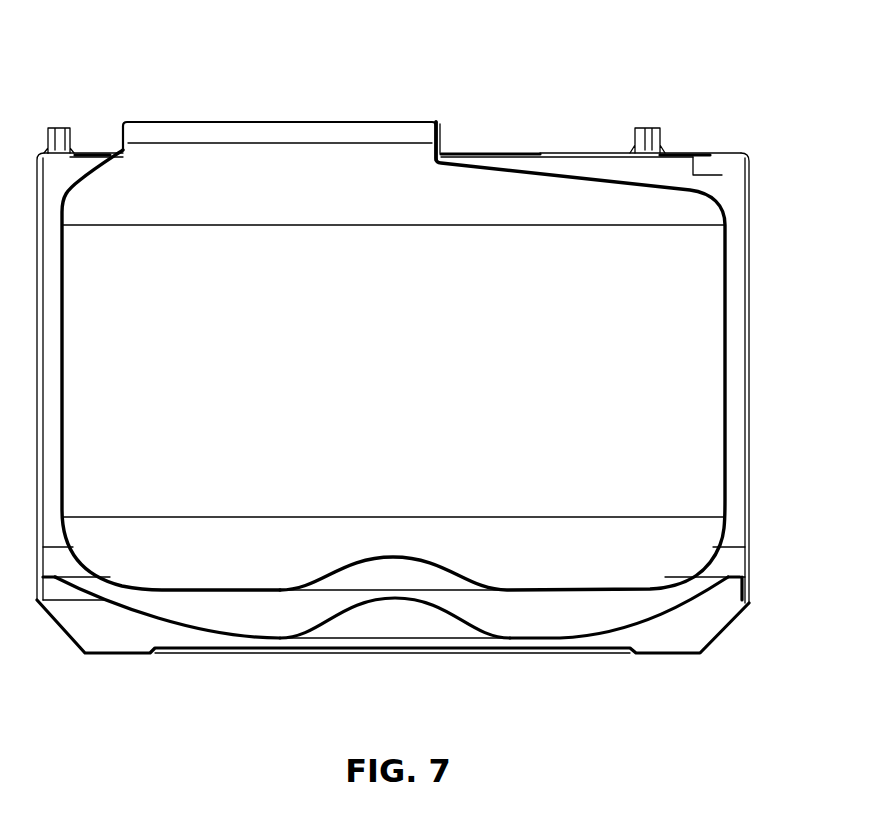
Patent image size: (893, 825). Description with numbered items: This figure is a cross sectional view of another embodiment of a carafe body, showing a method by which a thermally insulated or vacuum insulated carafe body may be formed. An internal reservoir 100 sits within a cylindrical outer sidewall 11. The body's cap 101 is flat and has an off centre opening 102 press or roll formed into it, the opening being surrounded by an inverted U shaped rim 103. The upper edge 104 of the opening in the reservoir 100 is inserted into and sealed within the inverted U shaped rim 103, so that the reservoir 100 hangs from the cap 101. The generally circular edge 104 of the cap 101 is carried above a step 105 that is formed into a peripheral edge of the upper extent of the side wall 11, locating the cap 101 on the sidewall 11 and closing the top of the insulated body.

The outer sidewall 11 is at (749, 232).
The internal reservoir 100 is at (580, 178).
The cap 101 is at (500, 152).
The off centre opening 102 is at (262, 142).
The inverted U shaped rim 103 is at (436, 121).
The upper edge 104 is at (125, 128).
The step 105 is at (722, 175).